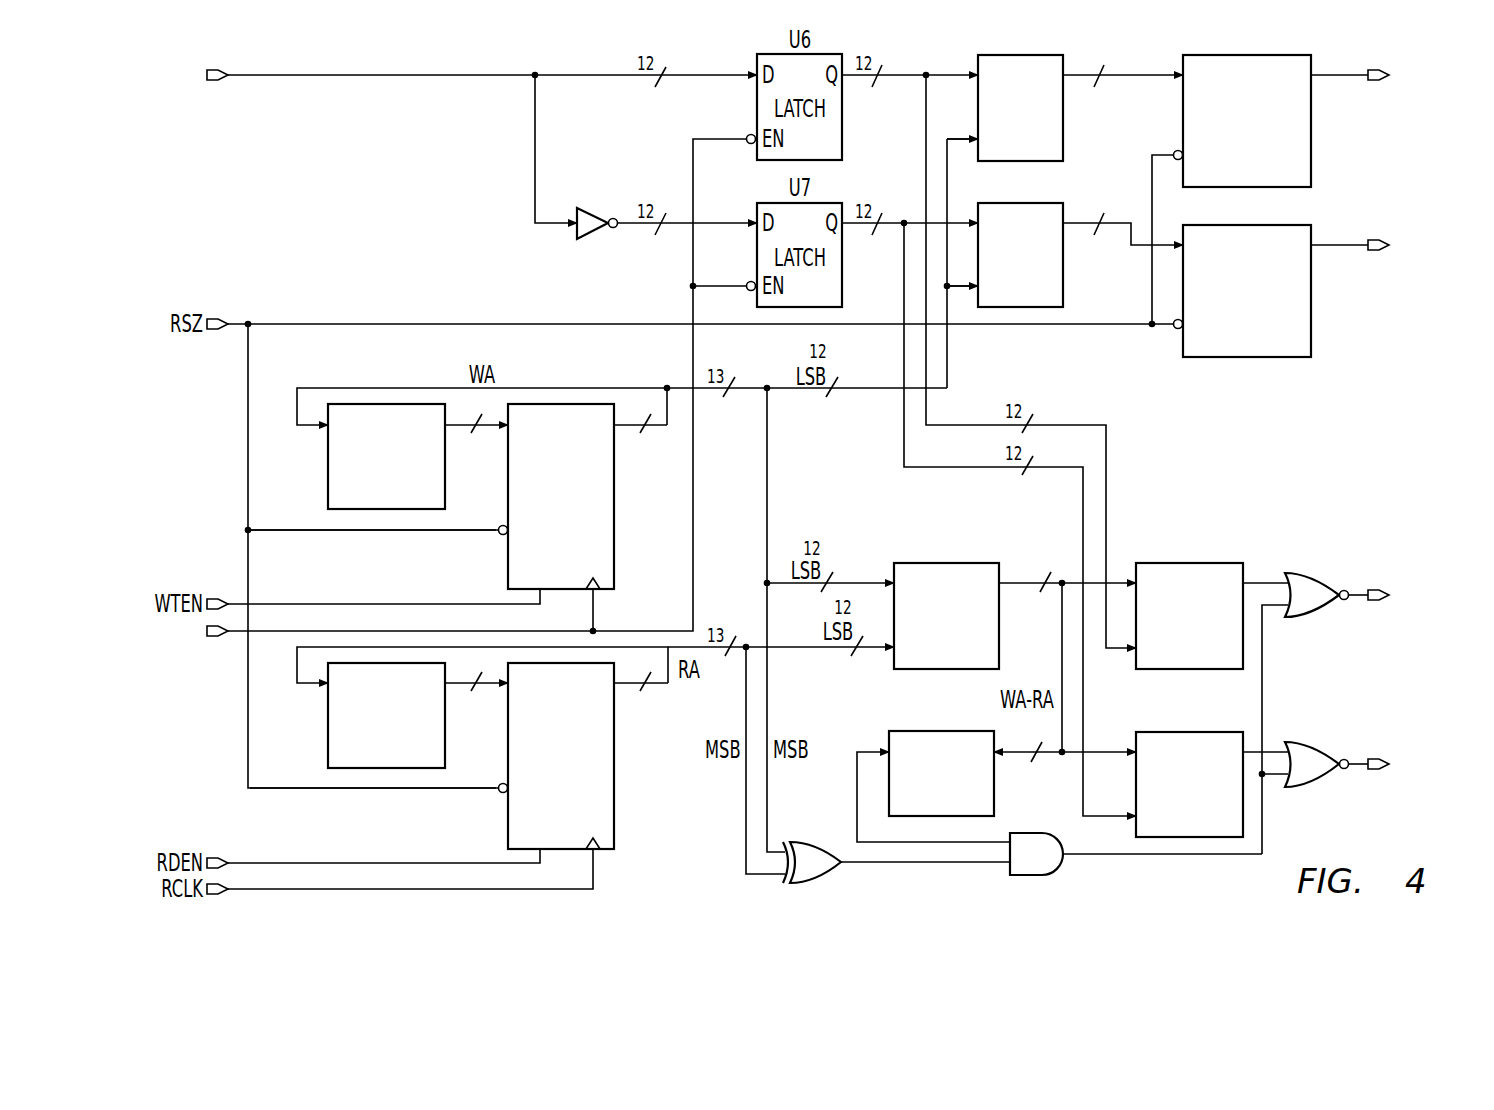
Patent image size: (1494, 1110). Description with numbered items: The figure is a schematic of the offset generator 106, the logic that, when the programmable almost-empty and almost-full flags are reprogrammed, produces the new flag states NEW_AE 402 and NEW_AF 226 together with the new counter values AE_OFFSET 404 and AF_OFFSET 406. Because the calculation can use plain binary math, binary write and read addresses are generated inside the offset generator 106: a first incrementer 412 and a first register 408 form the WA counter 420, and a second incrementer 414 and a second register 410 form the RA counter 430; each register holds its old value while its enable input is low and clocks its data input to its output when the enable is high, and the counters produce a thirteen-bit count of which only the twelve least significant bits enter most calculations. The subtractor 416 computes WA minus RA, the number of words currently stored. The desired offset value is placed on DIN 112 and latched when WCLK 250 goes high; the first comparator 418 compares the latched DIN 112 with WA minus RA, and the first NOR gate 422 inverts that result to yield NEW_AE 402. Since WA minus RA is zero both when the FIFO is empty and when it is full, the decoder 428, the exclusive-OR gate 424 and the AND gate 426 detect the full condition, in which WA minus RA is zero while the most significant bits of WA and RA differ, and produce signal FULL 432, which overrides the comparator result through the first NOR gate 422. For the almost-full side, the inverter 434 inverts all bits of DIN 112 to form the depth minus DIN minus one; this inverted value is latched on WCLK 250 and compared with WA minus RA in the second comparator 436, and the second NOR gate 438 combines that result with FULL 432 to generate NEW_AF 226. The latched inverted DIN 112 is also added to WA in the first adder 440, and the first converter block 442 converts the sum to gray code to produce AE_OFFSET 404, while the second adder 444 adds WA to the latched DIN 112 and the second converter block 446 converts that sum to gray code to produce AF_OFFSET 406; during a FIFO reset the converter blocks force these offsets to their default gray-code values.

The DIN 112 is at (185, 90).
The inverter U5 434 is at (595, 238).
The adder U8 444 is at (1065, 118).
The adder U9 440 is at (1065, 266).
The block U10 446 is at (1312, 150).
The block U11 442 is at (1247, 358).
The AF_OFFSET 406 is at (1440, 92).
The AE_OFFSET 404 is at (1440, 262).
The incrementer U1 412 is at (326, 466).
The WA counter 420 is at (440, 560).
The register U2 408 is at (615, 548).
The incrementer U3 414 is at (326, 725).
The RA counter 430 is at (440, 818).
The register U4 410 is at (615, 806).
The WCLK 250 is at (185, 648).
The subtractor U12 416 is at (978, 562).
The comparator U14 418 is at (1220, 562).
The NOR gate U16 422 is at (1318, 577).
The NEW_AE 402 is at (1418, 580).
The decoder U13 428 is at (912, 730).
The comparator U15 436 is at (1220, 731).
The gate U17 438 is at (1318, 746).
The NEW_AF 226 is at (1418, 750).
The gate U18 424 is at (808, 840).
The gate U19 426 is at (1030, 832).
The FULL 432 is at (1263, 810).
The offset generator 106 is at (1450, 812).